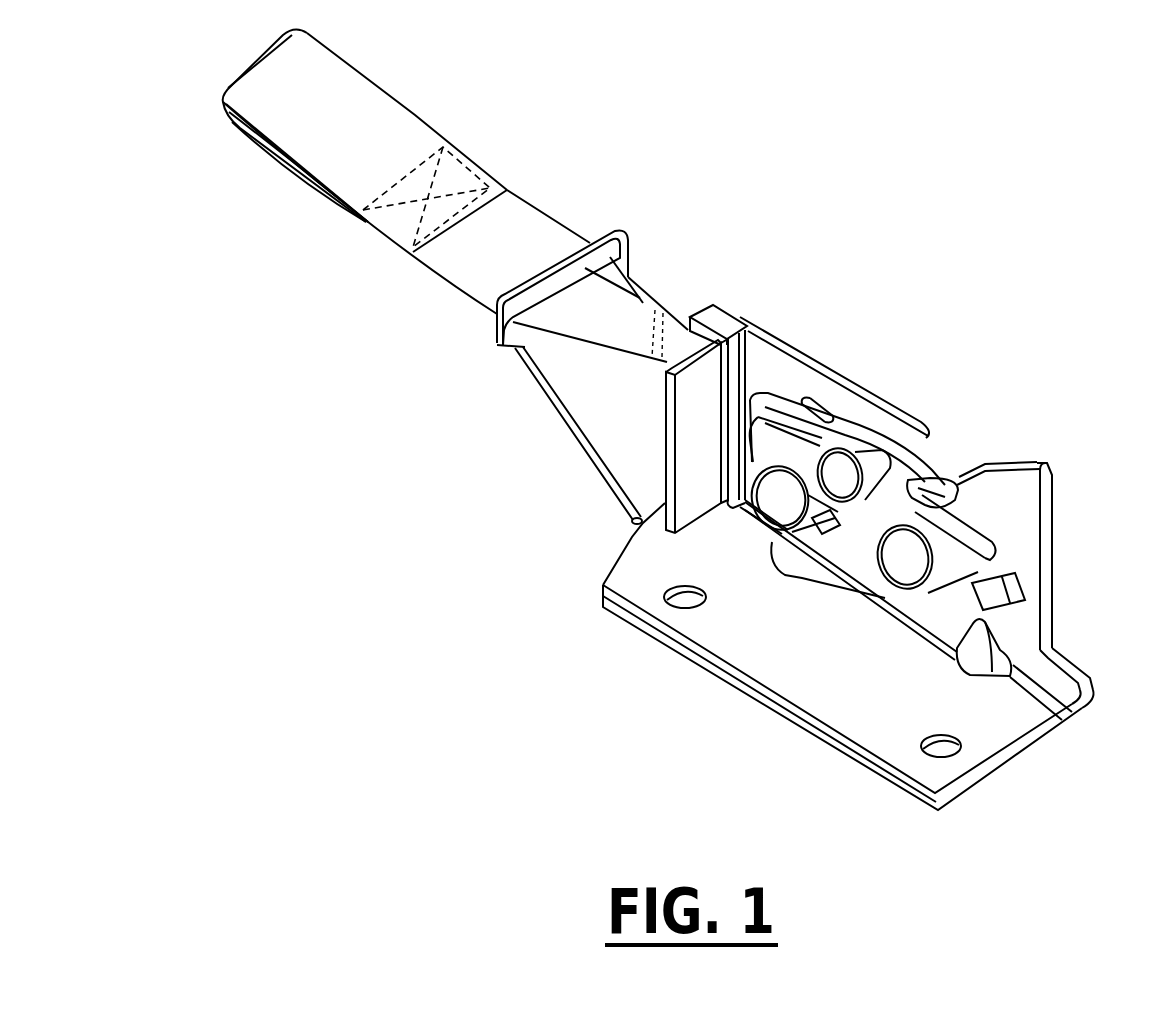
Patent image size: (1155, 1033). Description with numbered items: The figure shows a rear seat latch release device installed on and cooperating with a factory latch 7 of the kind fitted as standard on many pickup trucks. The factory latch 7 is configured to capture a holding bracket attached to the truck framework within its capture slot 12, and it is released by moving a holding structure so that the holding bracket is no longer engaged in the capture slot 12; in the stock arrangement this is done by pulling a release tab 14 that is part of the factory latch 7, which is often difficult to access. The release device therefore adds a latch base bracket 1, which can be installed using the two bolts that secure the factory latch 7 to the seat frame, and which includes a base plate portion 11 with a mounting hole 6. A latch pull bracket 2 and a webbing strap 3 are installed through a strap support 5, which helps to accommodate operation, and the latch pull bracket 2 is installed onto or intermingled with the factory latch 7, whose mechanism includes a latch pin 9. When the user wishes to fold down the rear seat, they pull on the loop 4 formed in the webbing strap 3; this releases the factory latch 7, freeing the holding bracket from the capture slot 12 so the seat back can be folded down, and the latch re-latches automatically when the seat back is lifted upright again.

The latch base bracket 1 is at (627, 585).
The latch pull bracket 2 is at (730, 317).
The webbing strap 3 is at (543, 240).
The loop 4 is at (288, 157).
The strap support 5 is at (497, 332).
The mounting hole 6 is at (937, 745).
The factory latch 7 is at (1008, 500).
The latch pin 9 is at (840, 480).
The base plate portion 11 is at (870, 683).
The capture slot 12 is at (927, 480).
The release tab 14 is at (688, 443).